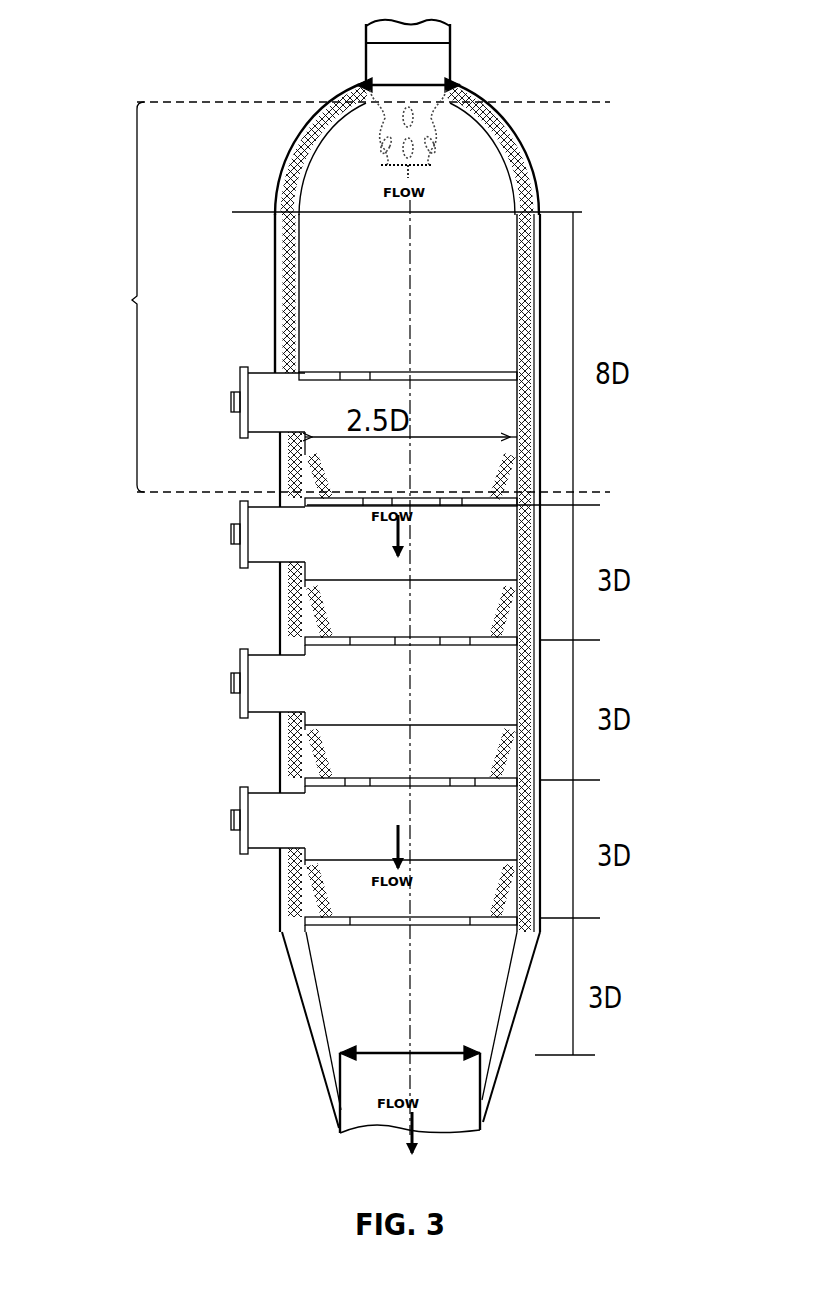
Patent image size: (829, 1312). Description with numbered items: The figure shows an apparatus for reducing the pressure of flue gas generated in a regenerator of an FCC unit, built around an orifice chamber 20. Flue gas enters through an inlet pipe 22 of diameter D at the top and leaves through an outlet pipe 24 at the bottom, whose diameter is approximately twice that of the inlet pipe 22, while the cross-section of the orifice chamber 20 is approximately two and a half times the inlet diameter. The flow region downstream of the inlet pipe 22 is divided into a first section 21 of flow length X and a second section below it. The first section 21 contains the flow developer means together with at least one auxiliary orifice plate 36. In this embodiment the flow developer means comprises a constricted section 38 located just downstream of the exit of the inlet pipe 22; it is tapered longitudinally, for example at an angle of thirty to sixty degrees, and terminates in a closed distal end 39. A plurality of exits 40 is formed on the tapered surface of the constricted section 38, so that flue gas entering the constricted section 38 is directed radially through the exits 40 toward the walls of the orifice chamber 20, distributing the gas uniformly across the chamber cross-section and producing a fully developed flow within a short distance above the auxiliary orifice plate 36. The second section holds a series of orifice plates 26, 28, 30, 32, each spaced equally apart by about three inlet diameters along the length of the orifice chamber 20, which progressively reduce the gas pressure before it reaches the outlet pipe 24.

The orifice chamber 20 is at (287, 155).
The first section 21 is at (134, 311).
The inlet pipe 22 is at (456, 65).
The outlet pipe 24 is at (488, 1112).
The orifice plate 26 is at (456, 497).
The orifice plate 28 is at (441, 633).
The orifice plate 30 is at (449, 776).
The orifice plate 32 is at (441, 915).
The auxiliary orifice plate 36 is at (431, 362).
The constricted section 38 is at (421, 131).
The closed distal end 39 is at (392, 168).
The exits 40 is at (378, 115).